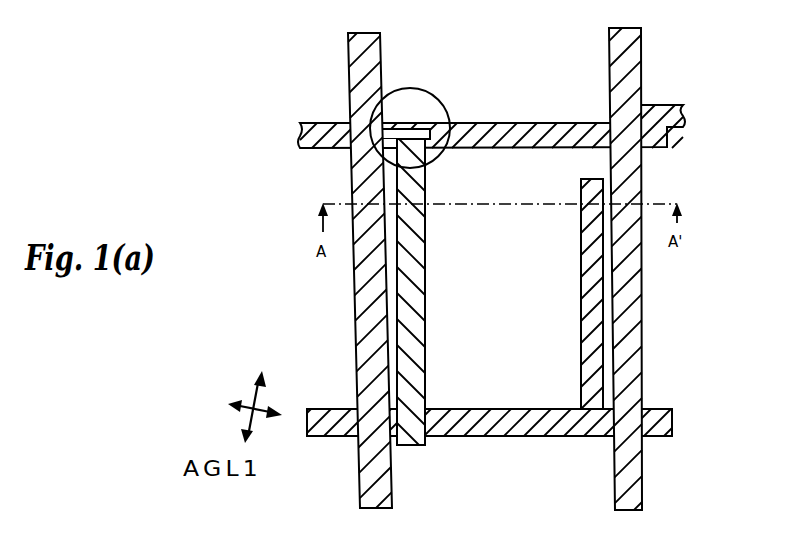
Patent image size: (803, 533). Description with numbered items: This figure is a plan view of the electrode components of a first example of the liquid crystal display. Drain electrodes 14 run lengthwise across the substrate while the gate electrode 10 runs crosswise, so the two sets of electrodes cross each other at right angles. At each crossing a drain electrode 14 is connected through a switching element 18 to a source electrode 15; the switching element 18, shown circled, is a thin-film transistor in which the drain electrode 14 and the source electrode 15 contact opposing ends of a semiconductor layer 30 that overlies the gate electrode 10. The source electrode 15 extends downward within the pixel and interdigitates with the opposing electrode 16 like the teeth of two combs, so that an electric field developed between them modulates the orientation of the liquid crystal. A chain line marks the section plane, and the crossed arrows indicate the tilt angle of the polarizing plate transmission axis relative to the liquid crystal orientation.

The gate electrode 10 is at (300, 140).
The drain electrode 14 is at (380, 41).
The source electrode 15 is at (425, 299).
The source electrode 16 is at (672, 415).
The switching element 18 is at (352, 104).
The semiconductor layer 30 is at (435, 96).